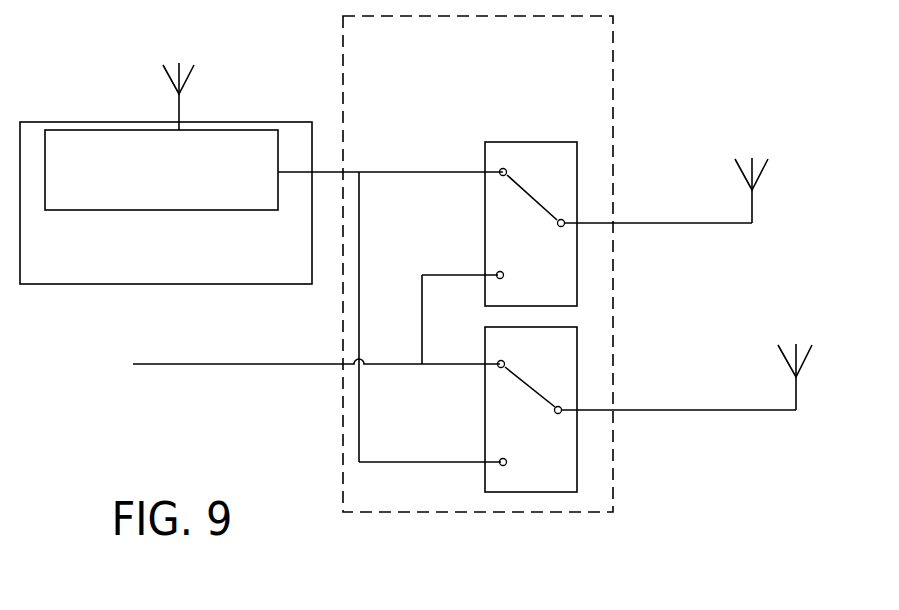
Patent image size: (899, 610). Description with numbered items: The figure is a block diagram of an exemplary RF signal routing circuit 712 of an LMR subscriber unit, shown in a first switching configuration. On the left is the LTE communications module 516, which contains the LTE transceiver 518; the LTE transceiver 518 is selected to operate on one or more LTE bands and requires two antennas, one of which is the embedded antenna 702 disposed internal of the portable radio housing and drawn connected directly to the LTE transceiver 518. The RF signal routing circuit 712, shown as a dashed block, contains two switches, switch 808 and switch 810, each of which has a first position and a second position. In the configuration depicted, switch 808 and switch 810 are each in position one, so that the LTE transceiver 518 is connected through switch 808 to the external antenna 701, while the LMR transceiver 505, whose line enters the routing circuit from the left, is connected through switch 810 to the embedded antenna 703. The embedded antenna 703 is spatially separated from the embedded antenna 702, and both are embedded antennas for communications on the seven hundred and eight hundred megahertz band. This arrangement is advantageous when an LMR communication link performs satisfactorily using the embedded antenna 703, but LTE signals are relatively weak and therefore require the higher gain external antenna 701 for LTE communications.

The LMR transceiver 505 is at (270, 376).
The LTE communications module 516 is at (180, 280).
The LTE transceiver 518 is at (161, 170).
The external antenna 701 is at (748, 204).
The embedded antenna 702 is at (177, 114).
The embedded antenna 703 is at (792, 390).
The RF signal routing circuit 712 is at (473, 115).
The switch 808 is at (538, 166).
The switch 810 is at (538, 352).